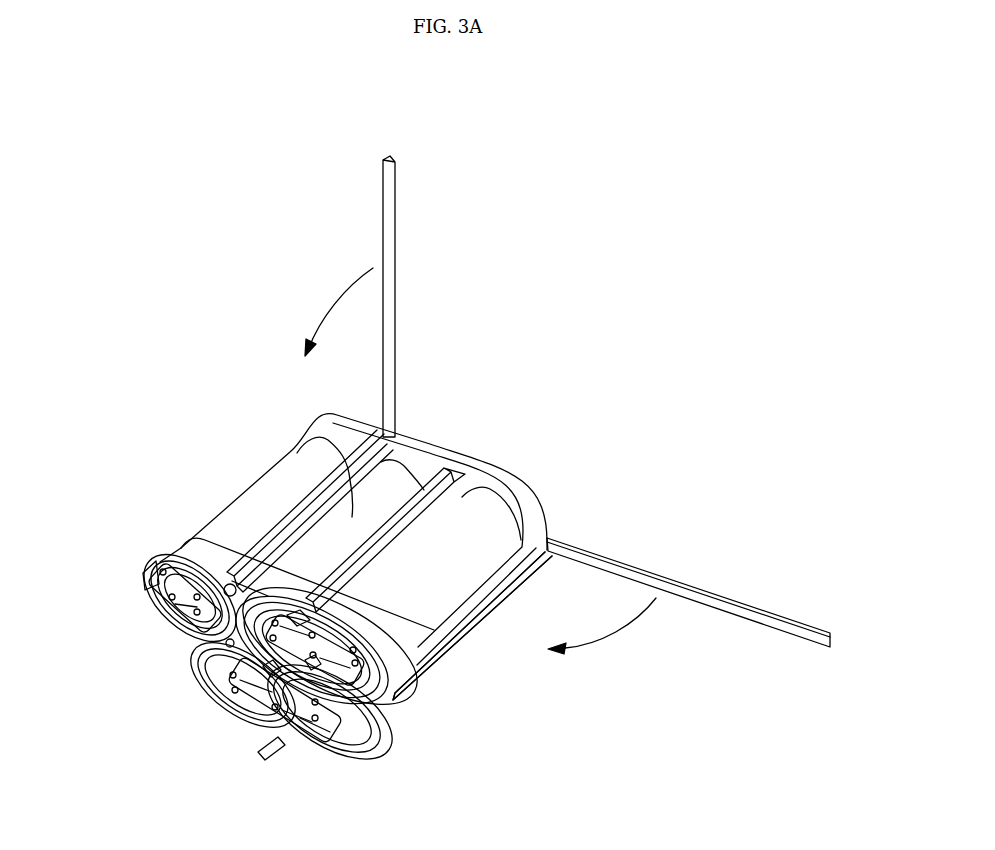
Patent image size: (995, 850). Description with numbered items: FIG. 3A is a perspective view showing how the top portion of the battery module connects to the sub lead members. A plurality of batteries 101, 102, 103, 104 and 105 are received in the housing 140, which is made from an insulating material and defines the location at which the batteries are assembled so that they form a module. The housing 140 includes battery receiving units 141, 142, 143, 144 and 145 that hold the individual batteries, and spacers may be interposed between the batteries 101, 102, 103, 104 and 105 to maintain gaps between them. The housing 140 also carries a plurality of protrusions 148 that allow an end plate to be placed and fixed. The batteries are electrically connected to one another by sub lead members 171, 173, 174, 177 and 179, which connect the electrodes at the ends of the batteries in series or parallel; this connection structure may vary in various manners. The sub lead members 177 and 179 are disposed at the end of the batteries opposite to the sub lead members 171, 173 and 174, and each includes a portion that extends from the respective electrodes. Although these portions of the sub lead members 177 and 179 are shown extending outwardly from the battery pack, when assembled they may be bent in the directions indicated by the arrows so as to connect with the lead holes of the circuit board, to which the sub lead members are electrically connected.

The housing 140 is at (172, 550).
The battery 101 is at (242, 511).
The battery 102 is at (350, 517).
The battery 103 is at (487, 553).
The sub lead member 177 is at (383, 188).
The sub lead member 179 is at (787, 626).
The sub lead member 173 is at (414, 661).
The sub lead member 171 is at (140, 587).
The sub lead member 174 is at (268, 757).
The battery receiving unit 141 is at (182, 627).
The battery receiving unit 142 is at (228, 648).
The battery receiving unit 143 is at (382, 702).
The battery receiving unit 145 is at (205, 683).
The battery 104 is at (335, 724).
The battery 105 is at (222, 698).
The battery receiving unit 144 is at (335, 728).
The protrusions 148 is at (270, 680).